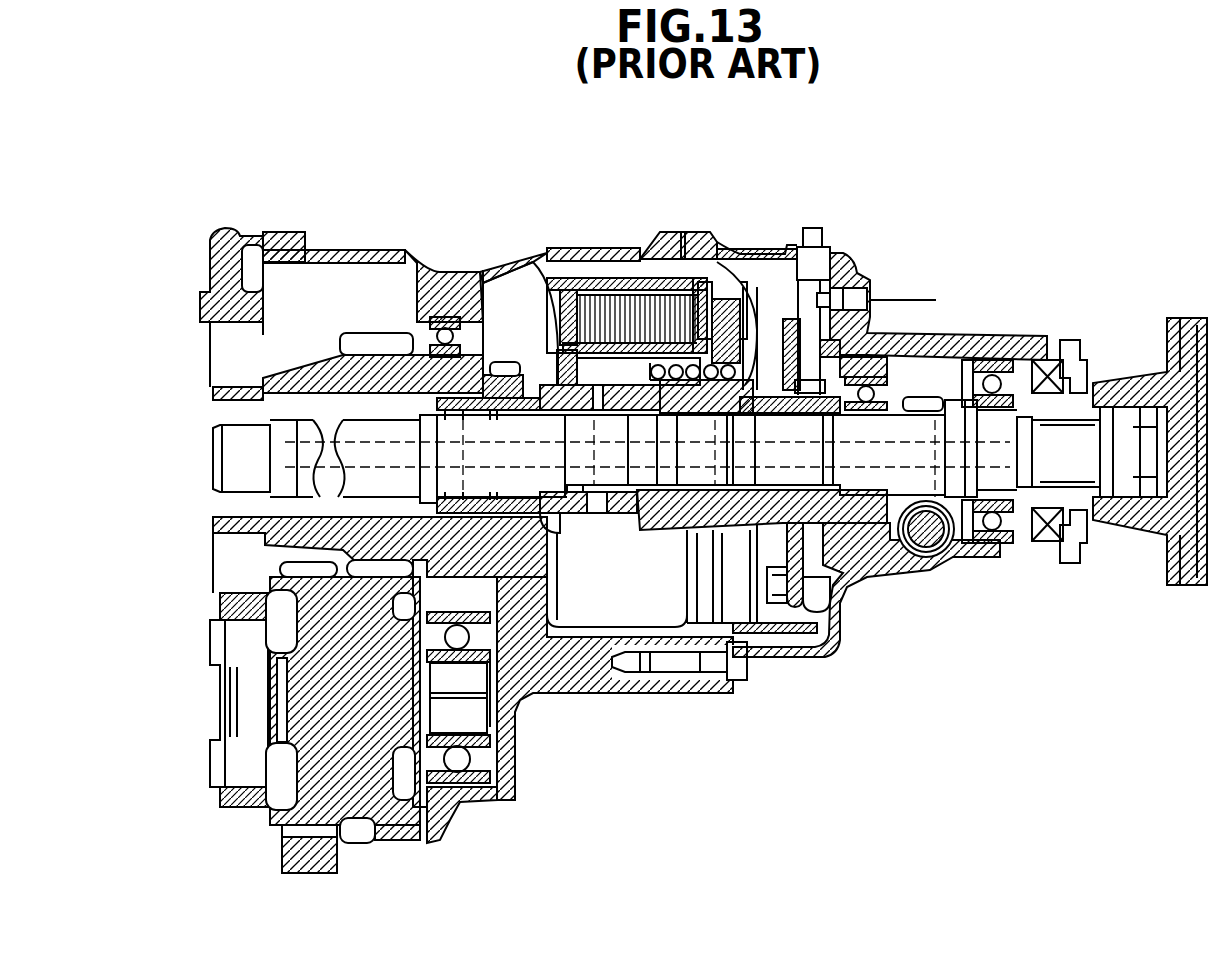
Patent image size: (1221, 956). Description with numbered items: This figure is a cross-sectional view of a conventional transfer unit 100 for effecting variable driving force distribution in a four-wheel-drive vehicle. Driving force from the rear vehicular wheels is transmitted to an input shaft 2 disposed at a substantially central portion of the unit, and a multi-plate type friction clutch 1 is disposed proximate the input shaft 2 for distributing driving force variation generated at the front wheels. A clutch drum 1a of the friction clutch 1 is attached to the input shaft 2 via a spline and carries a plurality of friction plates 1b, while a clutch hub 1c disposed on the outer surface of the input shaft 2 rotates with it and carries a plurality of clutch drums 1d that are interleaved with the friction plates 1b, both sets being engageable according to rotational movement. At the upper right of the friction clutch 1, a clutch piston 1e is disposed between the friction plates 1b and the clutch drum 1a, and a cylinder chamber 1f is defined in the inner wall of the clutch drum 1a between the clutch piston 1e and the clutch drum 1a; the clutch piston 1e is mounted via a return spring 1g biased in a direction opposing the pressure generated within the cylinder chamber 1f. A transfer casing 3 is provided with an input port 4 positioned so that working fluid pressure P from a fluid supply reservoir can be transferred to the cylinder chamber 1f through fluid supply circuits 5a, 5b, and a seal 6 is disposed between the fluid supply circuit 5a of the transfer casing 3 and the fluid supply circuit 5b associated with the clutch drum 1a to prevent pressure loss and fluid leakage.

The electromagnetic clutch device (prior art) 100 is at (410, 224).
The multi-plate type friction clutch 1 is at (608, 300).
The clutch drum 1a is at (773, 330).
The friction plates 1b is at (643, 310).
The clutch hub 1c is at (533, 285).
The clutch drums (hub plates) 1d is at (515, 310).
The clutch piston 1e is at (748, 300).
The cylinder chamber 1f is at (768, 330).
The return spring 1g is at (702, 282).
The input shaft 2 is at (882, 338).
The transfer casing 3 is at (670, 235).
The input port 4 is at (879, 290).
The fluid supply circuit 5a is at (852, 378).
The fluid supply circuit 5b is at (925, 405).
The seal 6 is at (863, 580).
The working fluid pressure P is at (936, 300).